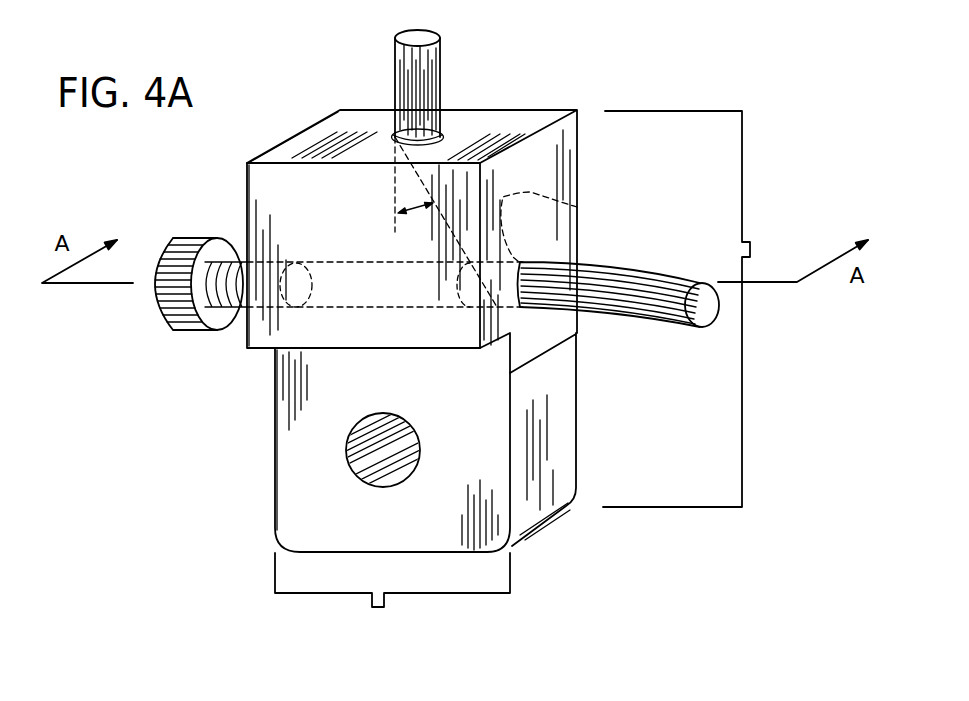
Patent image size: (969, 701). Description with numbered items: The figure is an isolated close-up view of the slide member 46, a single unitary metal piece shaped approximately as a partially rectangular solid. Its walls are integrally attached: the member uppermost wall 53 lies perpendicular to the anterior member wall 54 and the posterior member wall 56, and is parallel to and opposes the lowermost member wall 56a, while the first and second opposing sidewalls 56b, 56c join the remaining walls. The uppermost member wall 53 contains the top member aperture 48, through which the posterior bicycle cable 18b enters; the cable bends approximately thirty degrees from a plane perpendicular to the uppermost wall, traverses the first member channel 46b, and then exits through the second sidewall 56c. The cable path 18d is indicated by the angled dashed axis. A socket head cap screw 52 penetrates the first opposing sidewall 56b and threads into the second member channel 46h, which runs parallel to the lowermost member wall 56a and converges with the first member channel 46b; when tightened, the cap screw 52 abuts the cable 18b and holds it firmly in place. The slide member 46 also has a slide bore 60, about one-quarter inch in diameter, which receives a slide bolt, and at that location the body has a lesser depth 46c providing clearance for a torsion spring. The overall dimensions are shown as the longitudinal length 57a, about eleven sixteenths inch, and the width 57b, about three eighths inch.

The posterior bicycle cable 18b is at (443, 85).
The lead axis 18d is at (395, 177).
The slide member 46 is at (585, 243).
The first member channel 46b is at (447, 183).
The lesser depth 46c is at (473, 533).
The second member channel 46h is at (393, 293).
The top member aperture 48 is at (443, 130).
The socket head cap screw 52 is at (158, 303).
The member uppermost wall 53 is at (345, 137).
The anterior member wall 54 is at (282, 208).
The posterior member wall 56 is at (577, 140).
The lowermost member wall 56a is at (545, 513).
The first opposing sidewall 56b is at (276, 427).
The second opposing sidewall 56c is at (557, 377).
The longitudinal length 57a is at (752, 253).
The width 57b is at (375, 608).
The slide bore 60 is at (378, 450).